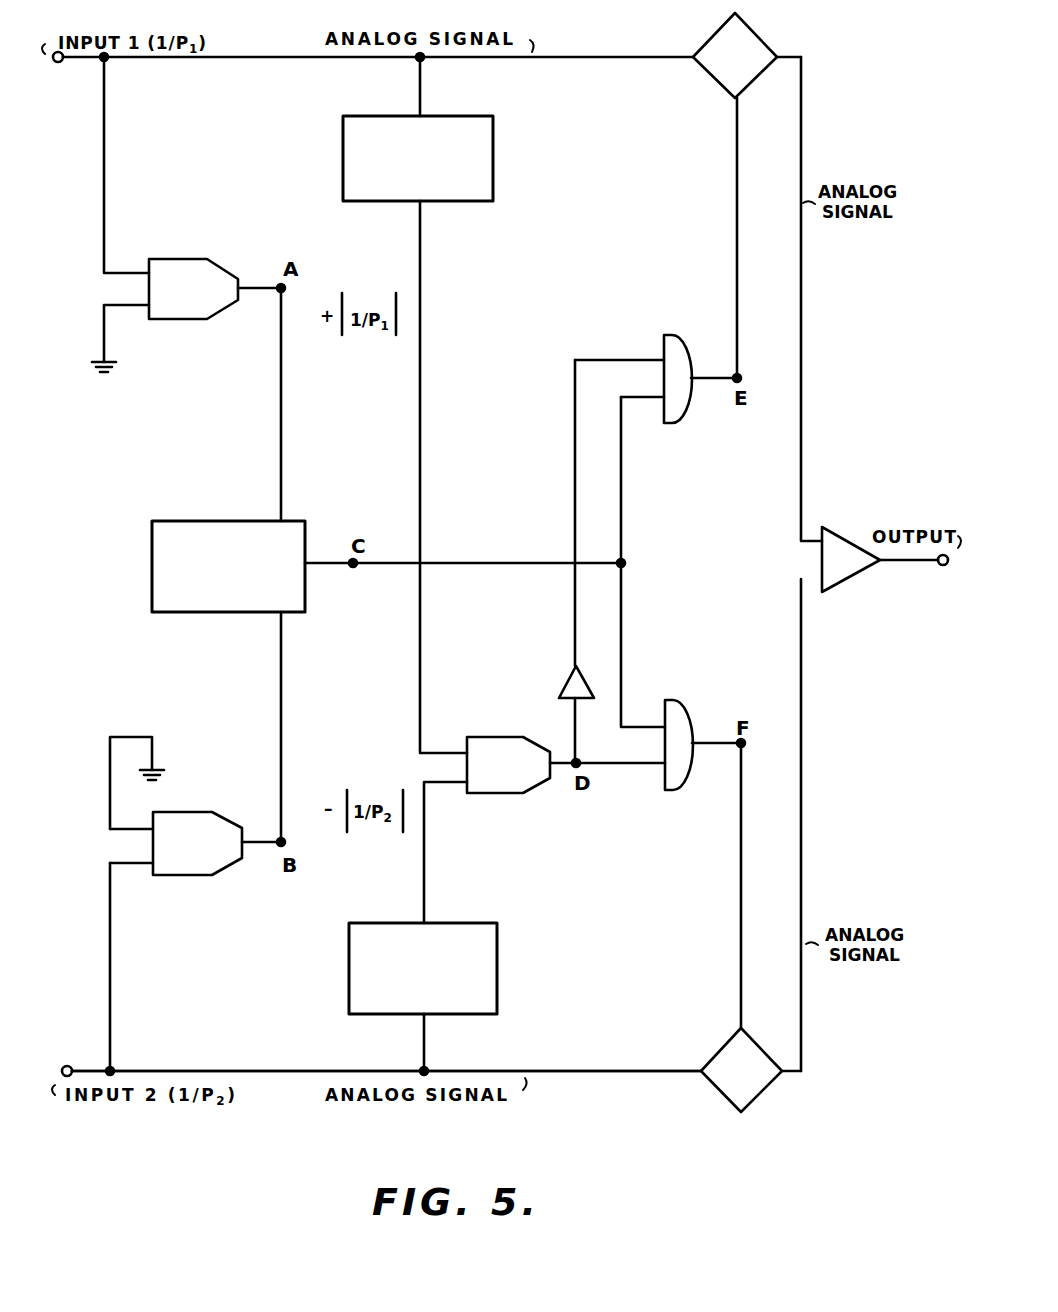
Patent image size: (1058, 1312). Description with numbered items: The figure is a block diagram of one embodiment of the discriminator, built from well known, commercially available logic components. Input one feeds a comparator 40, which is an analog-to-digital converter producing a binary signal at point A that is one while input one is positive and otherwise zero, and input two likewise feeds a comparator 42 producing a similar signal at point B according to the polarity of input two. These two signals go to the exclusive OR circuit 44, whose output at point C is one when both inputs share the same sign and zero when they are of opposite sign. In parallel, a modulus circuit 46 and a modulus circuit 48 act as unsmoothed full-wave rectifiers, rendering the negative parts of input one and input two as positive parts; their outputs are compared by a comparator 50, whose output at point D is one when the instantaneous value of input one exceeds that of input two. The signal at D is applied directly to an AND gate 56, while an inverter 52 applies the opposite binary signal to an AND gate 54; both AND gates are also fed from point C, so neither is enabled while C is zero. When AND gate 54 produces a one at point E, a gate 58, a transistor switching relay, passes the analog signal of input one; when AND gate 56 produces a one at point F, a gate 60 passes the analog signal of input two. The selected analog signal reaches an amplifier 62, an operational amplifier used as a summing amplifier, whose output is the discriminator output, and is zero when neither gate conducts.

The comparator 40 is at (199, 314).
The comparator 42 is at (193, 822).
The exclusive OR circuit 44 is at (152, 567).
The modulus circuit 46 is at (472, 196).
The modulus circuit 48 is at (472, 930).
The comparator 50 is at (497, 742).
The inverter 52 is at (562, 685).
The AND gate 54 is at (677, 334).
The AND gate 56 is at (680, 792).
The gate 58 is at (716, 80).
The gate 60 is at (722, 1050).
The amplifier 62 is at (846, 578).